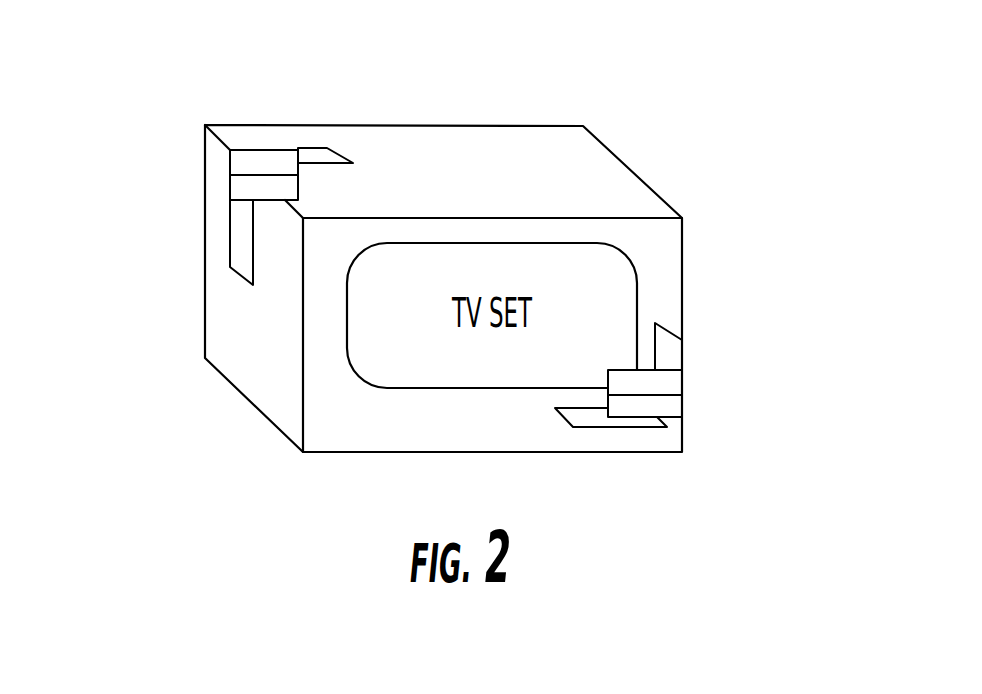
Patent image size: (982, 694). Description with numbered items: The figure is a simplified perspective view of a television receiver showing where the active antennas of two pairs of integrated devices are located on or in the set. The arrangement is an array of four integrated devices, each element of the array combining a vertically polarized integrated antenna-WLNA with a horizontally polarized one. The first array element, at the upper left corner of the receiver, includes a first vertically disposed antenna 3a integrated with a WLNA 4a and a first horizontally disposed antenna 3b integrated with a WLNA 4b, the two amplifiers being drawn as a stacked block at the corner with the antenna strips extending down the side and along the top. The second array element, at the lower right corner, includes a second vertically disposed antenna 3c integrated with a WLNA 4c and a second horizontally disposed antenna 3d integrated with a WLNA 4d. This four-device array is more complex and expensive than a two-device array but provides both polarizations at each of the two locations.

The first vertically disposed antenna 3a is at (209, 222).
The first horizontally disposed antenna 3b is at (345, 135).
The second vertically disposed antenna 3c is at (699, 329).
The second horizontally disposed antenna 3d is at (627, 438).
The WLNA 4a is at (233, 180).
The WLNA 4b is at (248, 147).
The WLNA 4c is at (683, 380).
The WLNA 4d is at (701, 407).